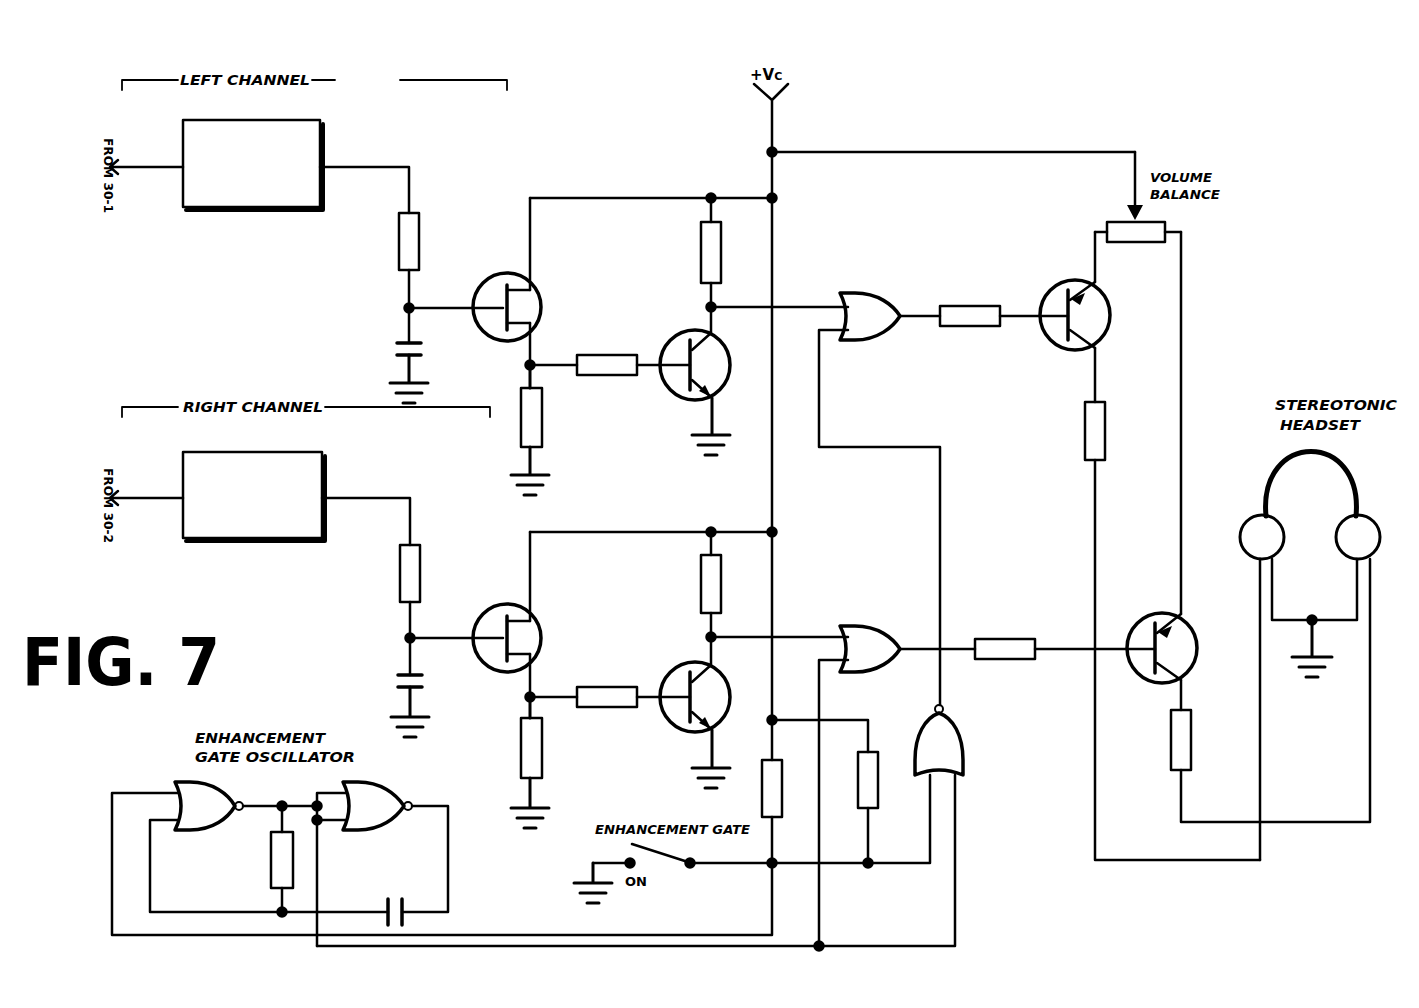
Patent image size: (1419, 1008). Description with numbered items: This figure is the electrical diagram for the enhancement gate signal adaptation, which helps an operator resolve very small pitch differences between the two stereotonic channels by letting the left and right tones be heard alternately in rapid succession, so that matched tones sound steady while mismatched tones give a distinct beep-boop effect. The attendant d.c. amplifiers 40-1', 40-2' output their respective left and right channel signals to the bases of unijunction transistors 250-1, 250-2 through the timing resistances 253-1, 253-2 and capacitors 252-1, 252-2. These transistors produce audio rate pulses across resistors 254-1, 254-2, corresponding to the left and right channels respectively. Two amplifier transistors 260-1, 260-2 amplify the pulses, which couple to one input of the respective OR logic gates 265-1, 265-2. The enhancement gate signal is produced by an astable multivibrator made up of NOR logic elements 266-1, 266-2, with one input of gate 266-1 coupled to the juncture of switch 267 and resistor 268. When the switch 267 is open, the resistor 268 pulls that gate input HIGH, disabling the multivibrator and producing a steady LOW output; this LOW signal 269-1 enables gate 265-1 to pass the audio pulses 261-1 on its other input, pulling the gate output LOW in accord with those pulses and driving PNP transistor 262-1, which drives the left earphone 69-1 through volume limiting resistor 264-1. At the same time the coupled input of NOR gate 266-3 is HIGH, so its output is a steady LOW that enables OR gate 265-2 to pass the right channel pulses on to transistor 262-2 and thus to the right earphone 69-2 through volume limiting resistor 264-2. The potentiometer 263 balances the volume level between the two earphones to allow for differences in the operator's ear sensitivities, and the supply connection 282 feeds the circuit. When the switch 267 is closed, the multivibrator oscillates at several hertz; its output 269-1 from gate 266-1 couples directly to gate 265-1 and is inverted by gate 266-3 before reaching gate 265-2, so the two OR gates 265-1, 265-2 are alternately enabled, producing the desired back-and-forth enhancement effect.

The d.c. amplifier 40-1' is at (291, 139).
The d.c. amplifier 40-2' is at (242, 527).
The timing resistance 253-1 is at (400, 248).
The timing resistance 253-2 is at (404, 570).
The capacitor 252-1 is at (395, 345).
The capacitor 252-2 is at (395, 678).
The unijunction transistor 250-1 is at (540, 308).
The unijunction transistor 250-2 is at (540, 638).
The resistor 254-1 is at (538, 430).
The resistor 254-2 is at (548, 762).
The amplifier transistor 260-1 is at (680, 350).
The amplifier transistor 260-2 is at (680, 683).
The audio pulses 261-1 is at (728, 305).
The OR logic gate 265-1 is at (868, 307).
The OR logic gate 265-2 is at (875, 640).
The enhancement gate signal 269-1 is at (822, 435).
The PNP transistor 262-1 is at (1053, 305).
The transistor 262-2 is at (1143, 632).
The potentiometer 263 is at (1107, 225).
The volume limiting resistor 264-1 is at (1092, 433).
The volume limiting resistor 264-2 is at (1178, 735).
The supply voltage terminal 282 is at (775, 100).
The left earphone 69-1 is at (1243, 522).
The right earphone 69-2 is at (1393, 505).
The NOR logic element 266-1 is at (210, 810).
The NOR logic element 266-2 is at (382, 810).
The NOR gate 266-3 is at (950, 745).
The switch 267 is at (655, 860).
The resistor 268 is at (878, 770).